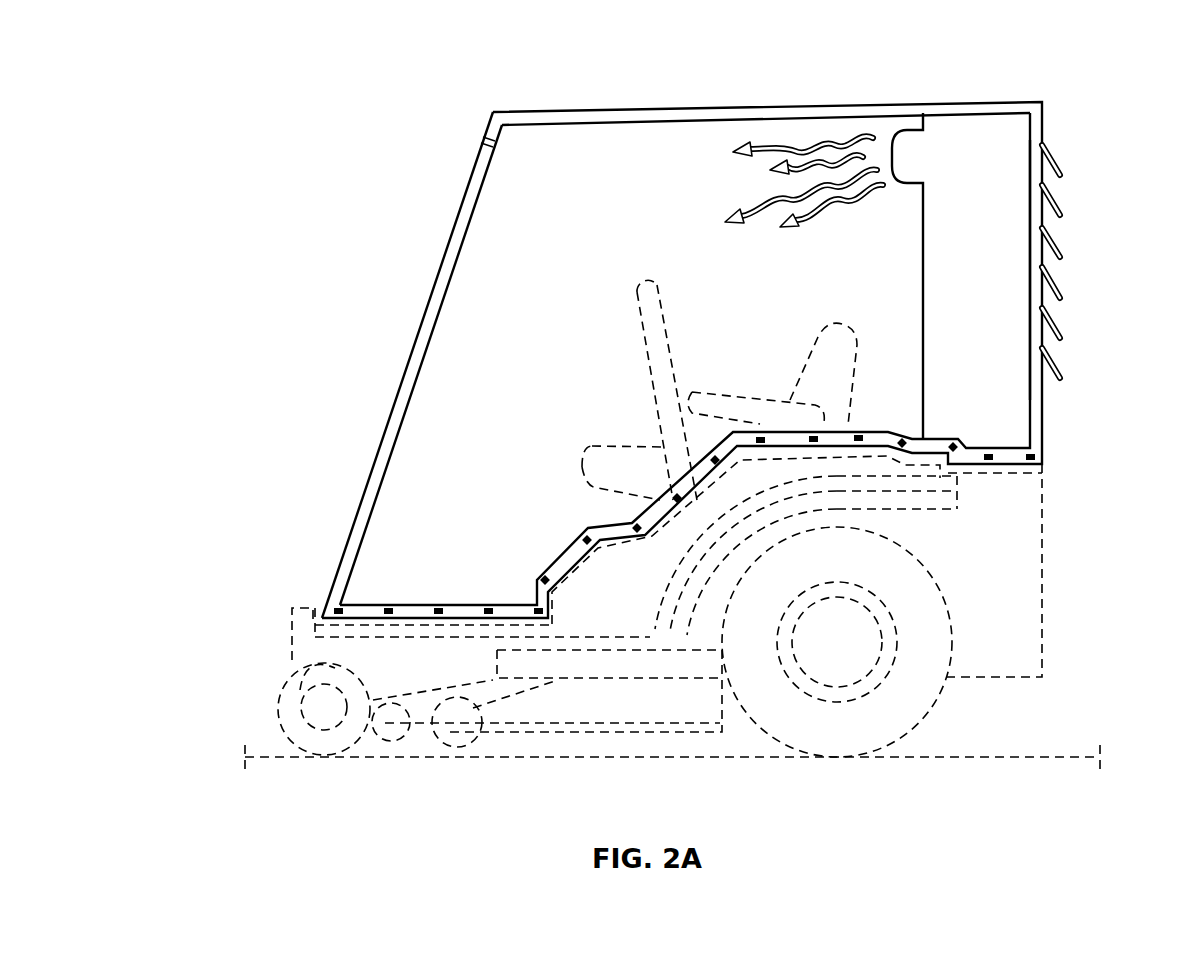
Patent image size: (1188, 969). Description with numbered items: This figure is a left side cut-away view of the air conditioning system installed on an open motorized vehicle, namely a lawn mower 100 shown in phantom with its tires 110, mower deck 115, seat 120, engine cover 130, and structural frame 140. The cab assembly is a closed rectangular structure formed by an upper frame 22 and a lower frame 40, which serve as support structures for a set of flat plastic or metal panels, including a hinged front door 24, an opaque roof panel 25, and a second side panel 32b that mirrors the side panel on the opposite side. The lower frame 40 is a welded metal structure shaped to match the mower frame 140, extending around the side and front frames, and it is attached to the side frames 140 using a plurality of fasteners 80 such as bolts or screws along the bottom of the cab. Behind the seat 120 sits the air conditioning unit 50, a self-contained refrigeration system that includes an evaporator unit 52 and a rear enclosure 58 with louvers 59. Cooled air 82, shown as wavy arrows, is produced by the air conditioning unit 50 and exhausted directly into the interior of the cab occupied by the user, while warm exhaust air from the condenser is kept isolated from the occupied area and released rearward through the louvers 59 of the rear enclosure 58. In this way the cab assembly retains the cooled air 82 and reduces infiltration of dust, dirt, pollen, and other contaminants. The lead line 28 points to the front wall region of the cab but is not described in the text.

The upper frame 22 is at (980, 110).
The opaque roof panel 25 is at (563, 112).
The hinged front door 24 is at (378, 452).
The front wall outer surface 28 is at (398, 367).
The second side panel 32b is at (536, 262).
The lower frame 40 is at (876, 432).
The air conditioning unit 50 is at (1086, 270).
The evaporator unit 52 is at (905, 130).
The rear enclosure 58 is at (1035, 298).
The louvers 59 is at (1048, 237).
The fasteners 80 is at (813, 437).
The cooled air 82 is at (790, 150).
The lawn mower 100 is at (1050, 585).
The tires 110 is at (278, 715).
The mower deck 115 is at (597, 707).
The seat 120 is at (840, 332).
The engine cover 130 is at (1045, 515).
The structural frame 140 is at (355, 627).